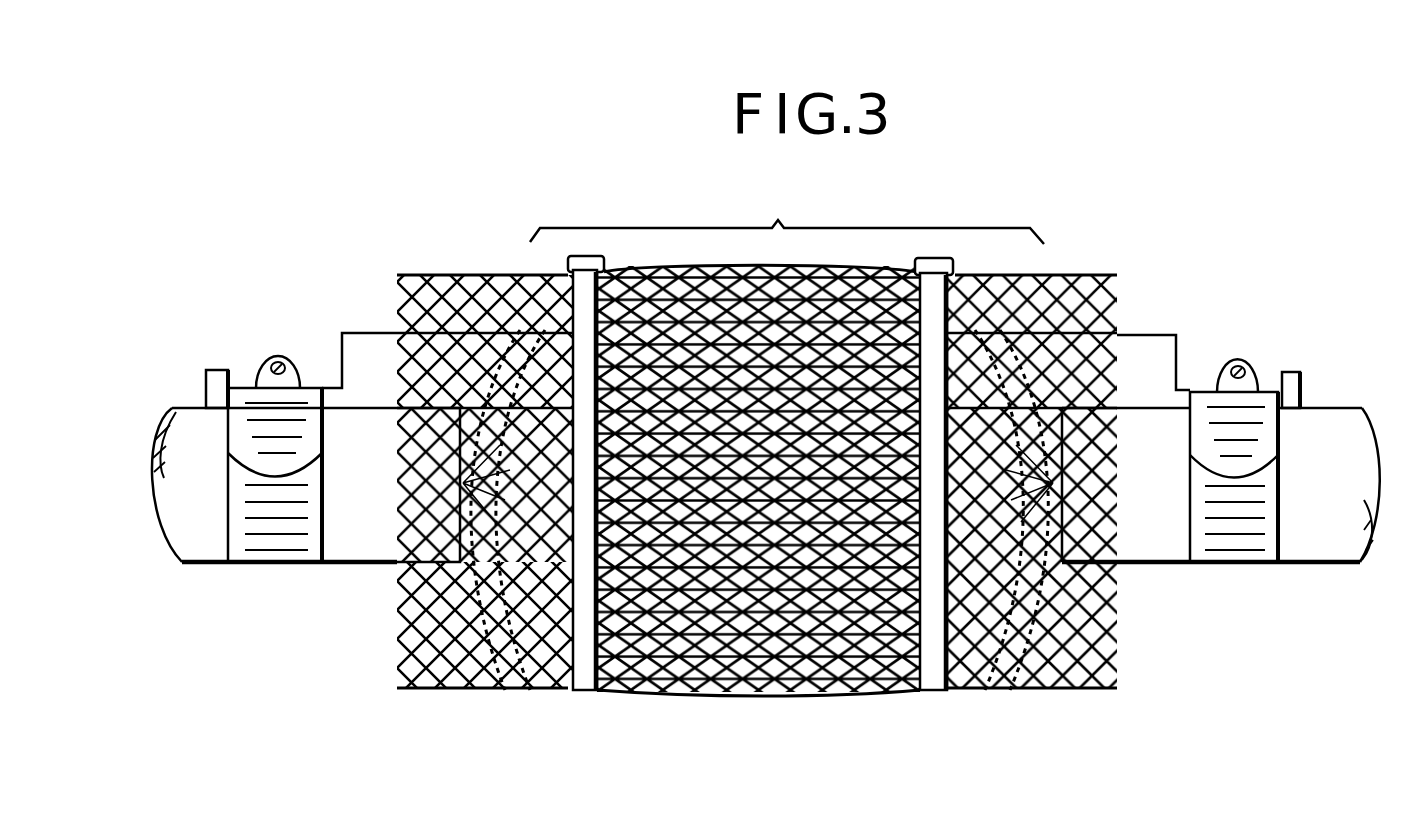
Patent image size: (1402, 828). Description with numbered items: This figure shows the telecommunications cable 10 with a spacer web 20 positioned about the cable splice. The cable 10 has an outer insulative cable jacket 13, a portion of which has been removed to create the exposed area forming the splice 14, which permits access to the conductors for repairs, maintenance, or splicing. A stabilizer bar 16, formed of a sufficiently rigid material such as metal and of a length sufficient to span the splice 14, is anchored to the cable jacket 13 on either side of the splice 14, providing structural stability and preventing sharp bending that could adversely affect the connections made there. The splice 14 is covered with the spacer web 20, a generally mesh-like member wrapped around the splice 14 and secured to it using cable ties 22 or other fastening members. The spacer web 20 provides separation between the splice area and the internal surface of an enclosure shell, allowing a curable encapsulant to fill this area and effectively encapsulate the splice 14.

The telecommunications cable 10 is at (1128, 622).
The cable jacket 13 is at (210, 540).
The splice 14 is at (787, 204).
The stabilizer bar 16 is at (1150, 366).
The spacer web 20 is at (412, 636).
The cable ties 22 is at (586, 690).